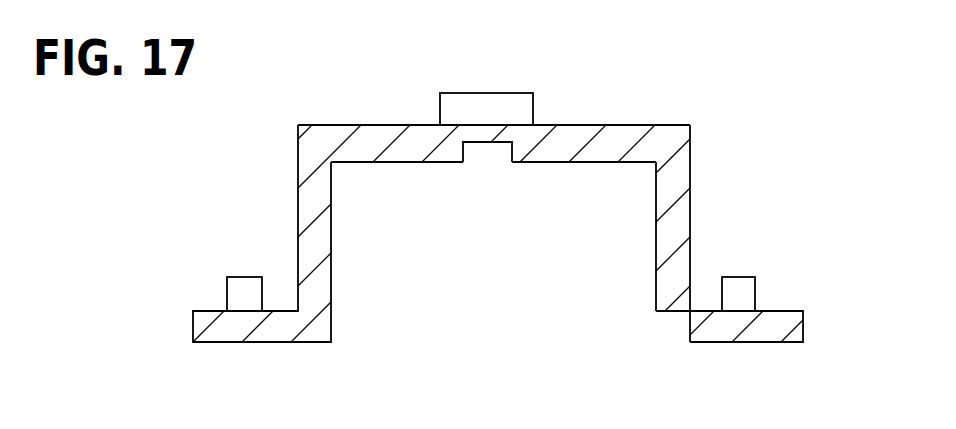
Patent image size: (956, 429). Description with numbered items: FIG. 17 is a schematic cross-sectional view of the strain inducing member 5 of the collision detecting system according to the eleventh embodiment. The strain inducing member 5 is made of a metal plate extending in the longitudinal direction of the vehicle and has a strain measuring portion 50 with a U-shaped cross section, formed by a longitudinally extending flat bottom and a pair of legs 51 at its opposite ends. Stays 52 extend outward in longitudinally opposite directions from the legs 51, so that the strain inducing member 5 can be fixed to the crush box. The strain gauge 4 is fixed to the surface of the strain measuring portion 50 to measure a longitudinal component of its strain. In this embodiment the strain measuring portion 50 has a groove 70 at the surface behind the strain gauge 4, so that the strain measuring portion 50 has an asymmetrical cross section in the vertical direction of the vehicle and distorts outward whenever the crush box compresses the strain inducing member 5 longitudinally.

The strain gauge 4 is at (505, 100).
The strain inducing member 5 is at (722, 90).
The strain measuring portion 50 is at (600, 125).
The legs 51 is at (678, 210).
The stays 52 is at (773, 325).
The groove 70 is at (490, 162).